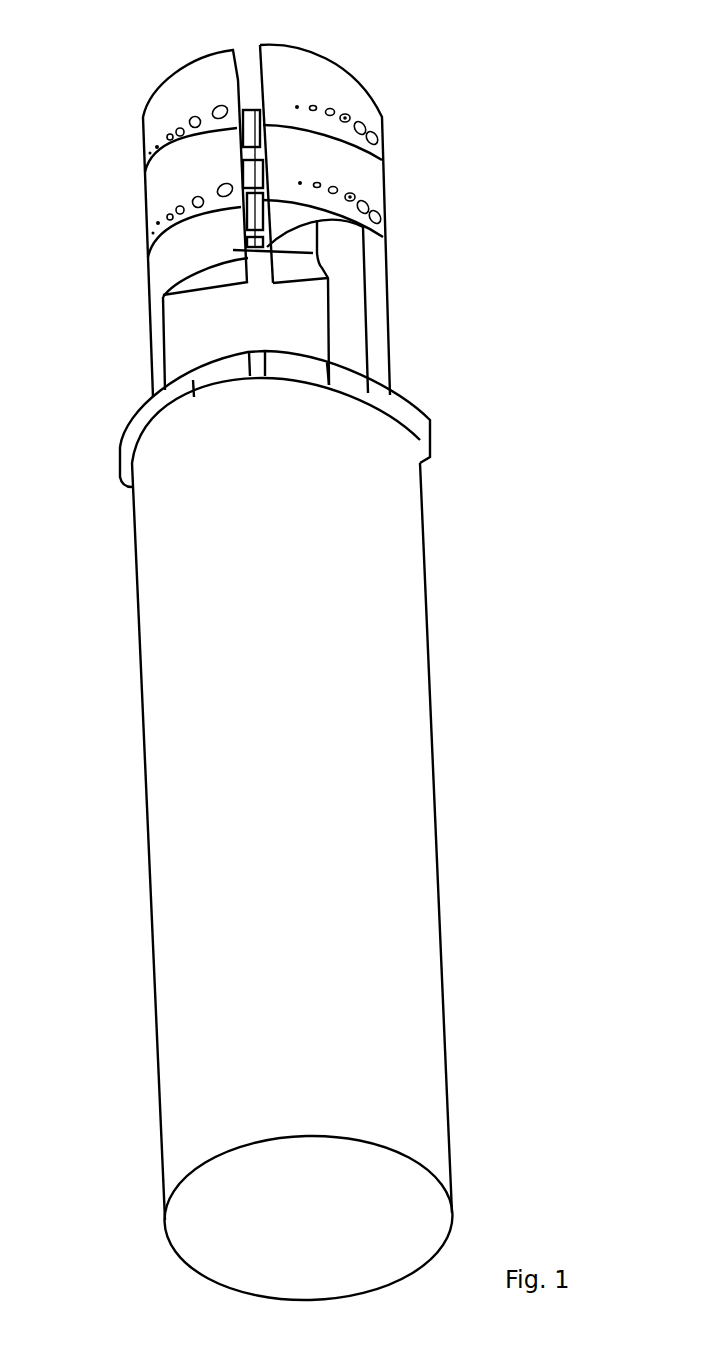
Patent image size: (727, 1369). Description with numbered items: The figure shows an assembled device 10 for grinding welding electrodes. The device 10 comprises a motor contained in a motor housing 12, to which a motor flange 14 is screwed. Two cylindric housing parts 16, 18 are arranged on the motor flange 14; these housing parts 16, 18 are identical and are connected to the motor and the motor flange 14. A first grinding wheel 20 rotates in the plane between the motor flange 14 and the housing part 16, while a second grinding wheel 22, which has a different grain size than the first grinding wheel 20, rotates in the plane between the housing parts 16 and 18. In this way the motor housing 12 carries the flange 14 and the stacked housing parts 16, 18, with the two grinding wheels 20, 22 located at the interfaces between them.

The device for grinding welding electrodes 10 is at (309, 200).
The motor housing 12 is at (258, 883).
The motor flange 14 is at (187, 413).
The housing part 16 is at (213, 198).
The housing part 18 is at (212, 116).
The first grinding wheel 20 is at (250, 233).
The second grinding wheel 22 is at (250, 153).